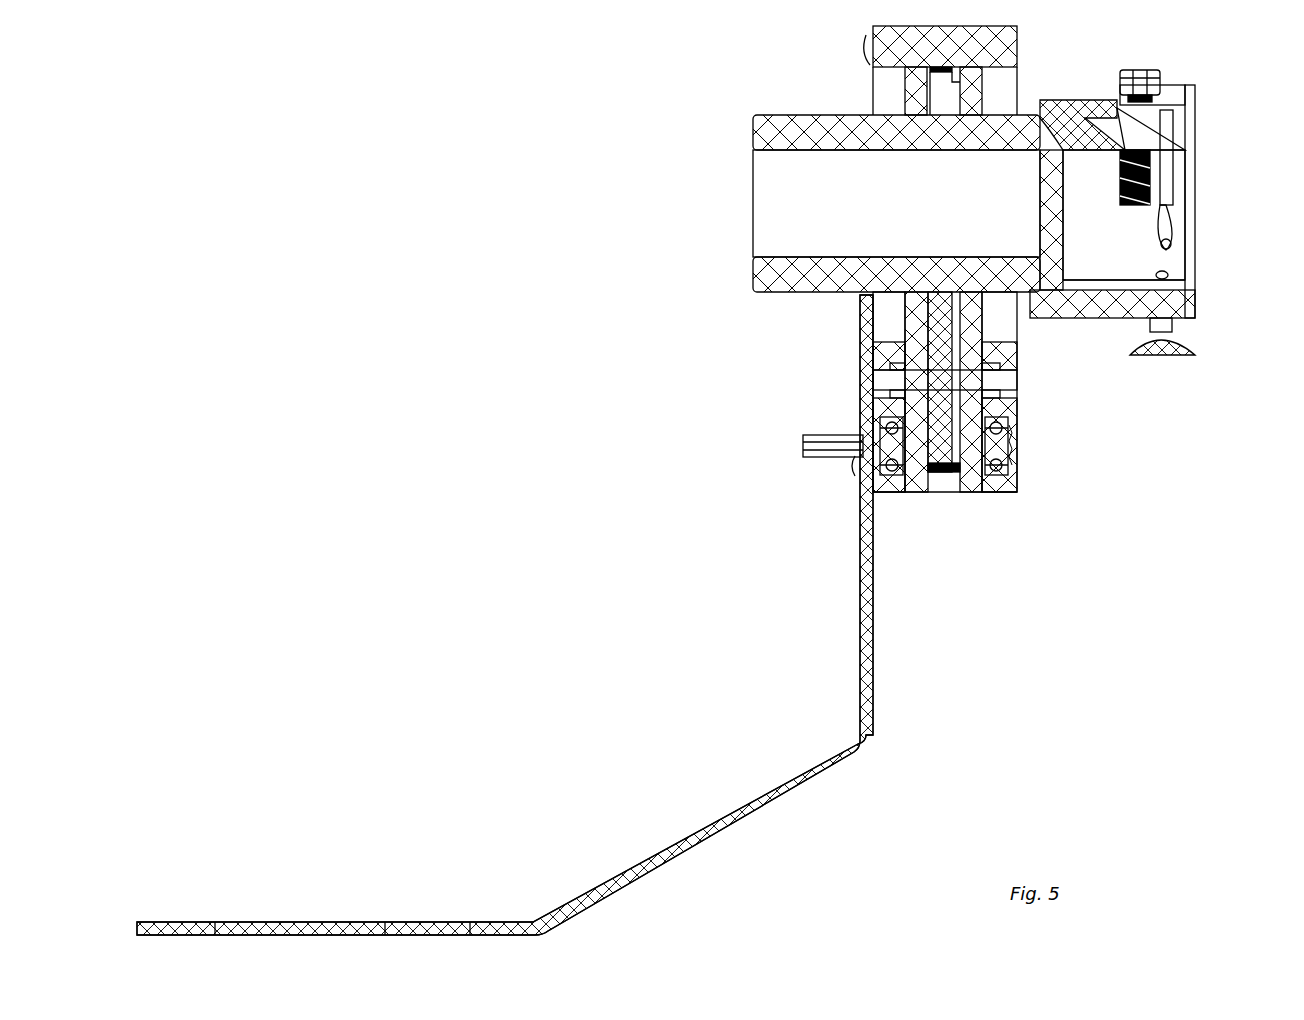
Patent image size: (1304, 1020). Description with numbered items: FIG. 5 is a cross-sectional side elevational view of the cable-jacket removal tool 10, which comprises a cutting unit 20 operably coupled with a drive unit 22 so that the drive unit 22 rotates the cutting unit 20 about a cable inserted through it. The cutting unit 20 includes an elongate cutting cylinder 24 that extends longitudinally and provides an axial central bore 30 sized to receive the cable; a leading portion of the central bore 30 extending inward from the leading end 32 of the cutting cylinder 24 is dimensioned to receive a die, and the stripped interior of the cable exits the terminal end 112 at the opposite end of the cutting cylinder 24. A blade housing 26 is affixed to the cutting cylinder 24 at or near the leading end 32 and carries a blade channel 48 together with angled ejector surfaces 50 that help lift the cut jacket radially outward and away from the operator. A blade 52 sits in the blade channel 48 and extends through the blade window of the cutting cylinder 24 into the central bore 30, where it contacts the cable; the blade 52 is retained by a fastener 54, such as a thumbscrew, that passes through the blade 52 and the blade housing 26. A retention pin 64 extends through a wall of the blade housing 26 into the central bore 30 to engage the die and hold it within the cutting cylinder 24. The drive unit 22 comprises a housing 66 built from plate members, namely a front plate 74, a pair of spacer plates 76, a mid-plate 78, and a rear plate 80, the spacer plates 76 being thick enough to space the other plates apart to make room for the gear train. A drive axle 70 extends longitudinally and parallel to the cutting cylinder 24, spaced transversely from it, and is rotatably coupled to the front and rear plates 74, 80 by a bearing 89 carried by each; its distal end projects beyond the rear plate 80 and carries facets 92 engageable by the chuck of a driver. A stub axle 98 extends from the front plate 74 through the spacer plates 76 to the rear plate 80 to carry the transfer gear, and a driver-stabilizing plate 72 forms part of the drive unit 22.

The cable-jacket removal tool 10 is at (556, 178).
The cutting unit 20 is at (1270, 350).
The drive unit 22 is at (1000, 575).
The elongate cutting cylinder 24 is at (795, 115).
The blade housing 26 is at (1082, 312).
The axial central bore 30 is at (760, 205).
The leading end 32 is at (1200, 288).
The blade channel 48 is at (1188, 85).
The ejector surfaces 50 is at (1082, 100).
The blade 52 is at (1195, 130).
The fastener 54 is at (1143, 68).
The retention pin 64 is at (1150, 350).
The housing 66 is at (1017, 488).
The drive axle 70 is at (803, 443).
The driver-stabilizing plate 72 is at (873, 632).
The front plate 74 is at (912, 496).
The spacer plates 76 is at (963, 496).
The mid-plate 78 is at (936, 496).
The rear plate 80 is at (883, 496).
The bearing 89 is at (880, 428).
The facets 92 is at (817, 455).
The stub axle 98 is at (873, 380).
The terminal end 112 is at (748, 291).